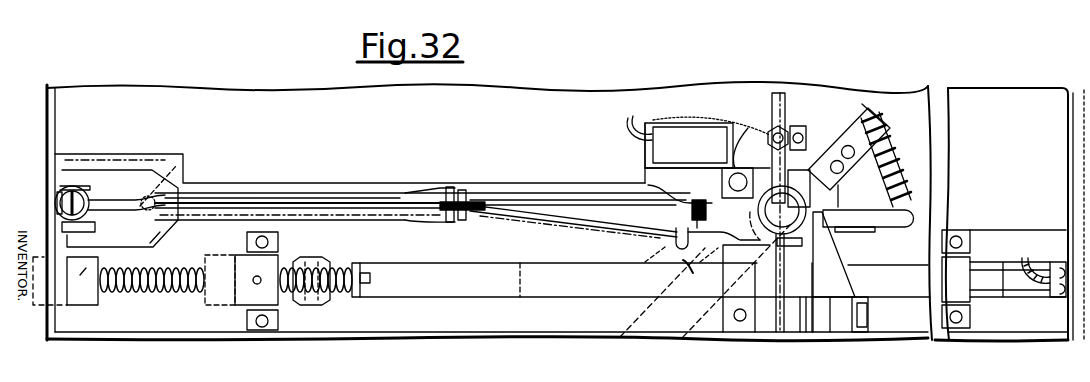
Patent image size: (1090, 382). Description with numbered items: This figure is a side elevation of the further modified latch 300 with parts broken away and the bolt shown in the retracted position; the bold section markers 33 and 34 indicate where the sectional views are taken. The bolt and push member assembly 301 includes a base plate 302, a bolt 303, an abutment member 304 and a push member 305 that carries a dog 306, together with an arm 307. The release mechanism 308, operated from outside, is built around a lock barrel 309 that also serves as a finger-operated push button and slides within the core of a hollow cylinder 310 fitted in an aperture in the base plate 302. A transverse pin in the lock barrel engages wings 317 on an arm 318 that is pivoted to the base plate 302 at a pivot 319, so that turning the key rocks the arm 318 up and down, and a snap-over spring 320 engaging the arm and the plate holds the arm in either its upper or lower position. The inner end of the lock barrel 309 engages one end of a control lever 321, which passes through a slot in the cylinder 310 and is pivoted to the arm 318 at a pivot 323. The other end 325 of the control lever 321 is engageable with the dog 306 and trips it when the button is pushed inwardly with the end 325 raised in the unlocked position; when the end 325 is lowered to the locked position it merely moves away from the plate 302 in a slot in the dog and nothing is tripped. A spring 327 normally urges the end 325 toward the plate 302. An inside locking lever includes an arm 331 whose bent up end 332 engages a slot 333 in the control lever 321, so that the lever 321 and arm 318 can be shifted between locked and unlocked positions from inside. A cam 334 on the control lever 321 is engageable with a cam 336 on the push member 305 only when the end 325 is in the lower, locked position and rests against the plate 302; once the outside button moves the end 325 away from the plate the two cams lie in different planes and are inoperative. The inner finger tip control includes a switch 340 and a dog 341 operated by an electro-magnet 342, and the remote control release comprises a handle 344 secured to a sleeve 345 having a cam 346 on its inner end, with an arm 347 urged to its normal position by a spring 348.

The further modified latch 300 is at (192, 162).
The bolt and push member assembly 301 is at (416, 299).
The base plate 302 is at (520, 185).
The bolt 303 is at (98, 297).
The abutment member 304 is at (392, 270).
The push member 305 is at (876, 293).
The dog 306 is at (833, 277).
The arm 307 is at (1079, 280).
The release mechanism 308 is at (381, 194).
The lock barrel 309 is at (56, 214).
The hollow cylinder 310 is at (58, 189).
The wings 317 is at (62, 186).
The arm 318 is at (128, 175).
The pivot 319 is at (429, 192).
The snap-over spring 320 is at (160, 172).
The control lever 321 is at (305, 195).
The pivot 323 is at (456, 190).
The end of control lever 325 is at (802, 242).
The spring 327 is at (477, 212).
The arm 331 is at (712, 197).
The bent up end 332 is at (703, 203).
The slot 333 is at (650, 187).
The cam 334 is at (676, 229).
The cam 336 is at (682, 262).
The switch 340 is at (790, 104).
The dog 341 is at (737, 165).
The electro-magnet 342 is at (652, 126).
The handle 344 is at (647, 315).
The sleeve 345 is at (808, 207).
The cam 346 is at (750, 196).
The arm 347 is at (892, 222).
The spring 348 is at (893, 133).
The section line 33- 33 is at (673, 241).
The section line 34- 34 is at (683, 278).